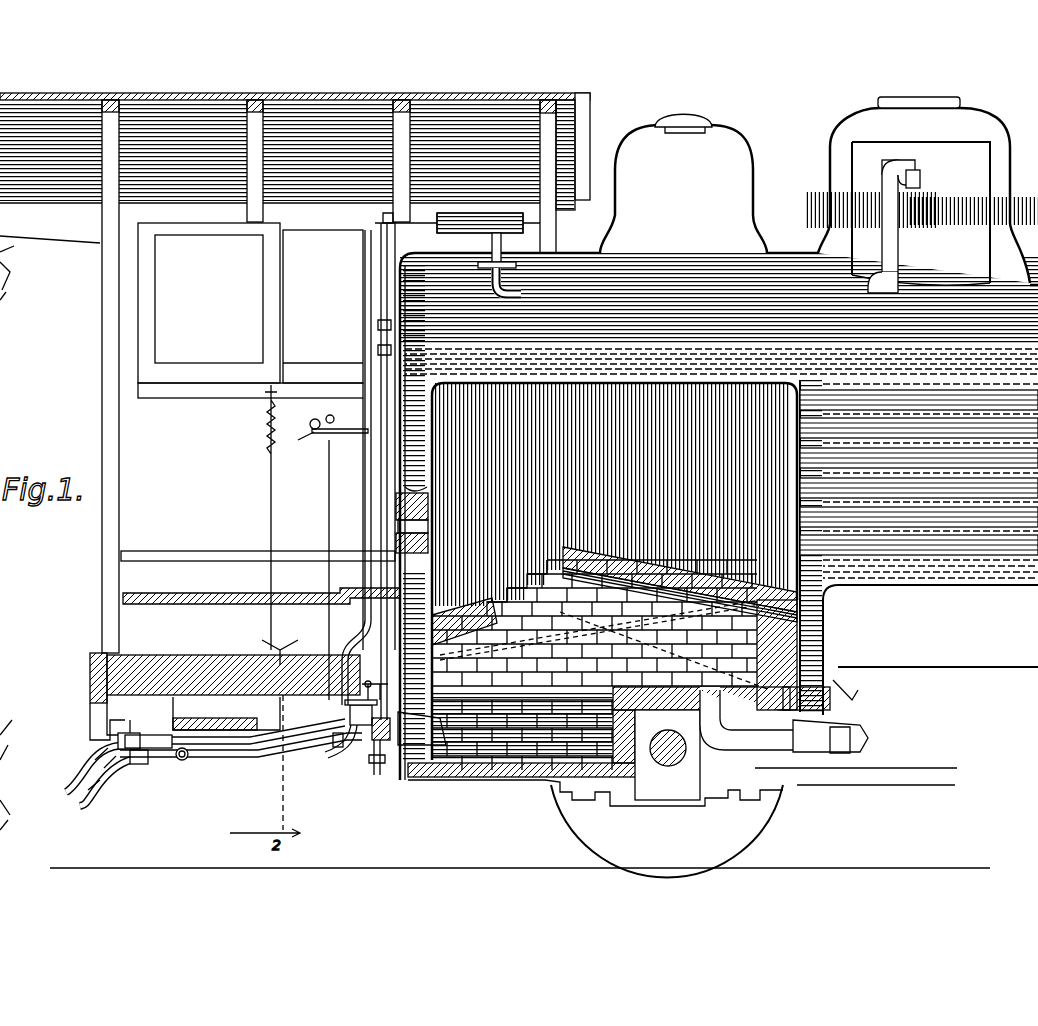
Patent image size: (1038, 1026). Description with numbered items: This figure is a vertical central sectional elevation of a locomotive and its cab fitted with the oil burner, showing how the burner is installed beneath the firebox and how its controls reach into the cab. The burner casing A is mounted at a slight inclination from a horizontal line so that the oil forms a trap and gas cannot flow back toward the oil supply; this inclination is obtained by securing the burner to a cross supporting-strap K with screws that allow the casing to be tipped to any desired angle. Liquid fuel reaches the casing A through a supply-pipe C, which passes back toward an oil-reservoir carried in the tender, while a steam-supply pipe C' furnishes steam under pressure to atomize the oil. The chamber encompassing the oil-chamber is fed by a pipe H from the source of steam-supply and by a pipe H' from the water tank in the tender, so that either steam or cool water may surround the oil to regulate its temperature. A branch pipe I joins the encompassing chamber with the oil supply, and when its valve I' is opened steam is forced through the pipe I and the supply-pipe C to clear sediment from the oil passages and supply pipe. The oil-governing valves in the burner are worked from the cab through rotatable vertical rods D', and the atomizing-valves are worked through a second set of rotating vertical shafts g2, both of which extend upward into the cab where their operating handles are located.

The casing A is at (360, 735).
The supply-pipe C is at (235, 724).
The steam-supply pipe C' is at (423, 634).
The rotatable vertical rods D' is at (365, 466).
The pipe H is at (332, 467).
The pipe H' is at (324, 762).
The branch pipe I is at (241, 774).
The valve I' is at (174, 780).
The cross supporting-strap K is at (350, 710).
The rotating vertical shafts g2 is at (331, 527).